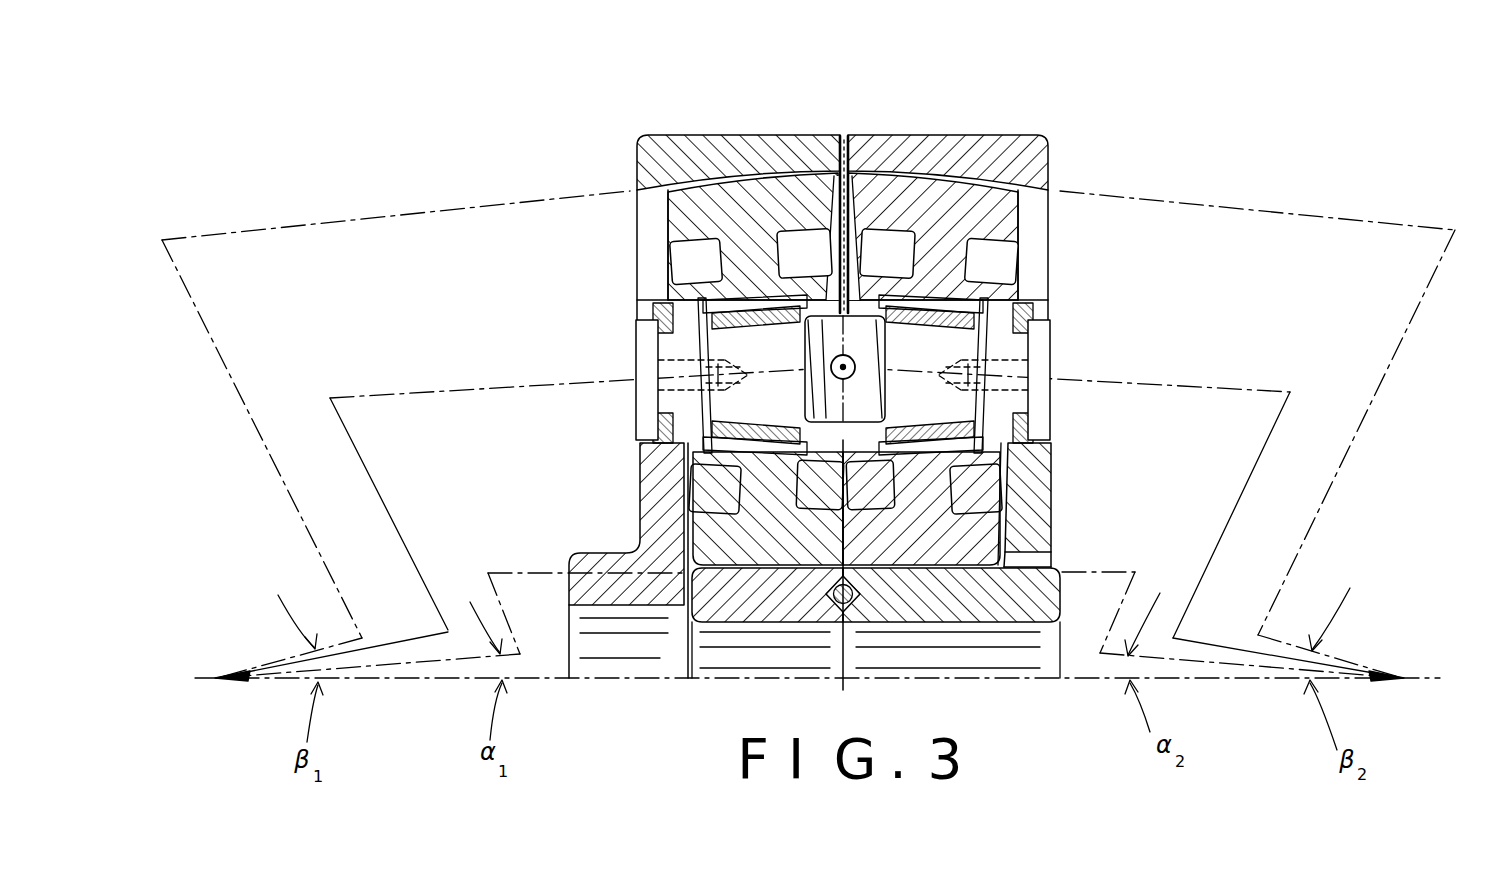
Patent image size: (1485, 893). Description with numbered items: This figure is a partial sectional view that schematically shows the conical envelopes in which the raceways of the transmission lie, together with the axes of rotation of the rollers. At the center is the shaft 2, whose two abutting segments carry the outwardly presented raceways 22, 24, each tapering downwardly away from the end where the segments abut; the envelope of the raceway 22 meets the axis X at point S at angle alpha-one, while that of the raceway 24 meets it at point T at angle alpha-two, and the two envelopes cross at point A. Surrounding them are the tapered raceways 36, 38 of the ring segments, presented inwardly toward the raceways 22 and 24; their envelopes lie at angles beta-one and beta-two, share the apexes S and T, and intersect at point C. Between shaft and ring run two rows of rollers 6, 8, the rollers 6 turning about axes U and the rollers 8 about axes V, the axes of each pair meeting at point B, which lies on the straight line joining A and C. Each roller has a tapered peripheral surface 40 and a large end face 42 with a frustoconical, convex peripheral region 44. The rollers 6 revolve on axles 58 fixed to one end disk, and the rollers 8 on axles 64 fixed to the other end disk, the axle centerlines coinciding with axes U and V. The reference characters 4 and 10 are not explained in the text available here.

The shaft 2 is at (1043, 670).
The housing cap 4 is at (1060, 148).
The rollers 6 is at (655, 270).
The rollers 8 is at (1040, 265).
The lower housing 10 is at (625, 516).
The raceway 22 is at (748, 550).
The raceway 24 is at (954, 552).
The tapered raceway 36 is at (712, 203).
The tapered raceway 38 is at (975, 205).
The tapered peripheral surface 40 is at (752, 197).
The large end face 42 is at (833, 195).
The peripheral region 44 is at (838, 530).
The axles 58 is at (830, 368).
The axles 64 is at (950, 398).